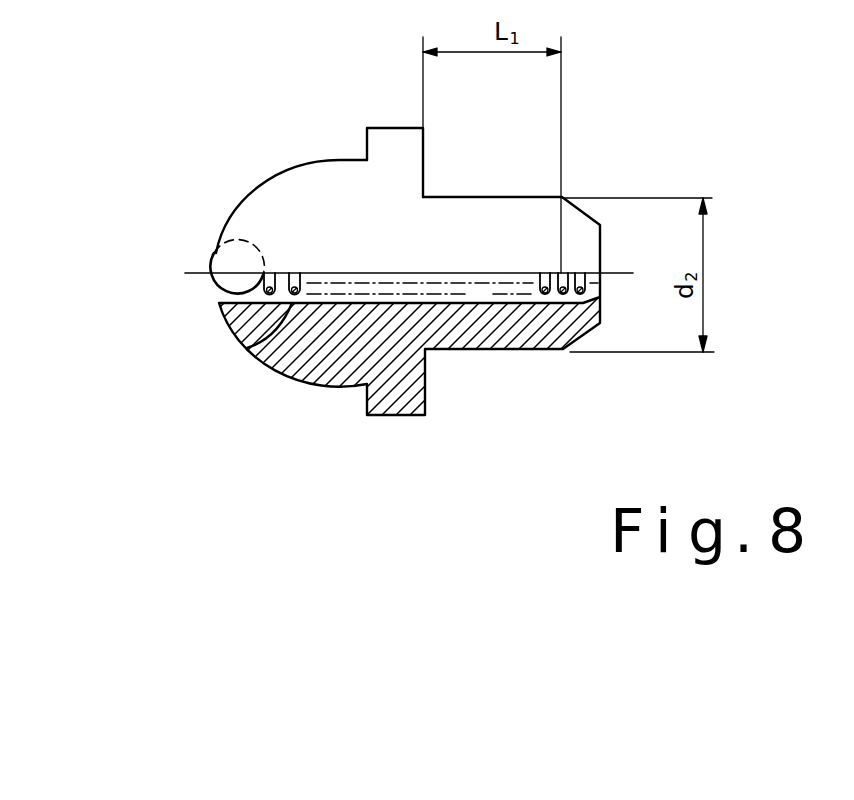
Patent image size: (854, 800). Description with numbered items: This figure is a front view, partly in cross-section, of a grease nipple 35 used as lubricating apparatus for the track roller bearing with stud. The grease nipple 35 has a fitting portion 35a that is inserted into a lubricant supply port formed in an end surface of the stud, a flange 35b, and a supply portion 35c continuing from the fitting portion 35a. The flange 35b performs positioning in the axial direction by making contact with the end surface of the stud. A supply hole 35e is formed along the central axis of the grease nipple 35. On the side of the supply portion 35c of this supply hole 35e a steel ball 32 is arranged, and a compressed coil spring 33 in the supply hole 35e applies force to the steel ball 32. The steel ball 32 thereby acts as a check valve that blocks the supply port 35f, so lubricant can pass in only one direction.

The grease nipple 35 is at (256, 146).
The fitting portion 35a is at (495, 212).
The flange 35b is at (387, 140).
The supply portion 35c is at (253, 218).
The supply hole 35e is at (474, 303).
The supply port 35f is at (213, 293).
The steel ball 32 is at (232, 276).
The compressed coil spring 33 is at (243, 348).